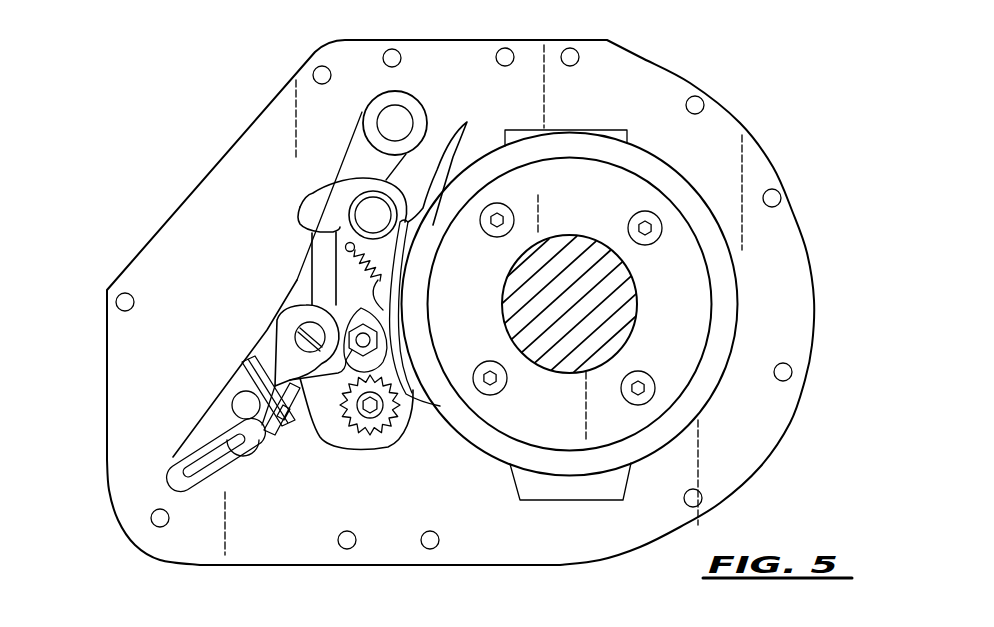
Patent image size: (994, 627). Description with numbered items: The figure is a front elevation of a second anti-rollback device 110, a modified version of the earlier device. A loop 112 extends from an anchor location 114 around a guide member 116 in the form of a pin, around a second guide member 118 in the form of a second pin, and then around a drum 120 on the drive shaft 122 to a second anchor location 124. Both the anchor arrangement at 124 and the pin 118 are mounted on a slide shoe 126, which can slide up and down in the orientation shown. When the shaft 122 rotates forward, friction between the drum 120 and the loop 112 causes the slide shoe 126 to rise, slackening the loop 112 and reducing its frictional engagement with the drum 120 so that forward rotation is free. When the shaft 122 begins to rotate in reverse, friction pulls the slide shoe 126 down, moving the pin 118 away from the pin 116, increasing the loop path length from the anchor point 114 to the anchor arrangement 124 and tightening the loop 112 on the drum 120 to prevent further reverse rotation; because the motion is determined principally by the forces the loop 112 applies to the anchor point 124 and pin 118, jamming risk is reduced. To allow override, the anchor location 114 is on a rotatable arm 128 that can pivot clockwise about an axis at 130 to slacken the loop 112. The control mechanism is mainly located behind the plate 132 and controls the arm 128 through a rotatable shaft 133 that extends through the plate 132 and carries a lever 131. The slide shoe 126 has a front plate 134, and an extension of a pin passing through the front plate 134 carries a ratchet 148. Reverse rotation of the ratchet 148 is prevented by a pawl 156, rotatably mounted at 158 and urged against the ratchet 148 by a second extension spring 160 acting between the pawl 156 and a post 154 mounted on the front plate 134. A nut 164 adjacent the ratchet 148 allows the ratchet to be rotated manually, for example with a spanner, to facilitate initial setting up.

The anti-rollback device 110 is at (196, 160).
The loop 112 is at (505, 412).
The anchor location 114 is at (302, 447).
The guide member 116 is at (398, 120).
The second guide member 118 is at (362, 213).
The drum 120 is at (570, 315).
The drive shaft 122 is at (590, 260).
The second anchor location 124 is at (414, 452).
The slide shoe 126 is at (300, 268).
The rotatable arm 128 is at (258, 378).
The pivot axis 130 is at (300, 337).
The lever 131 is at (175, 467).
The plate 132 is at (247, 343).
The rotatable shaft 133 is at (252, 400).
The front plate 134 is at (294, 428).
The ratchet 148 is at (368, 432).
The post 154 is at (346, 247).
The pawl 156 is at (372, 317).
The pawl mounting 158 is at (368, 340).
The second extension spring 160 is at (376, 272).
The nut 164 is at (379, 412).